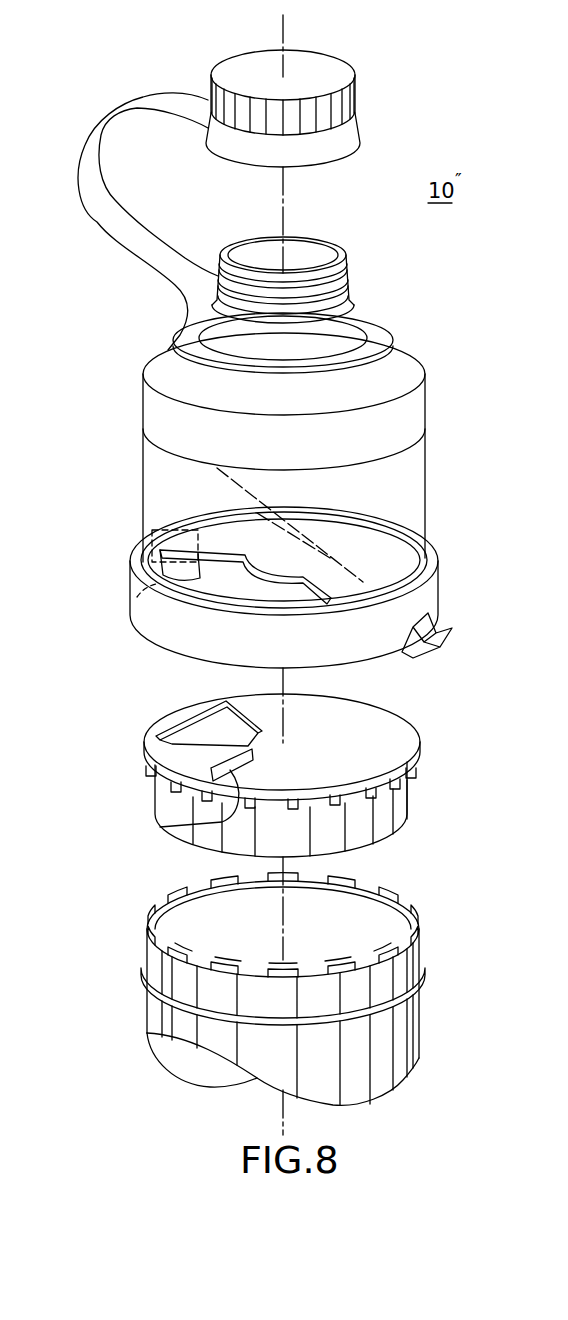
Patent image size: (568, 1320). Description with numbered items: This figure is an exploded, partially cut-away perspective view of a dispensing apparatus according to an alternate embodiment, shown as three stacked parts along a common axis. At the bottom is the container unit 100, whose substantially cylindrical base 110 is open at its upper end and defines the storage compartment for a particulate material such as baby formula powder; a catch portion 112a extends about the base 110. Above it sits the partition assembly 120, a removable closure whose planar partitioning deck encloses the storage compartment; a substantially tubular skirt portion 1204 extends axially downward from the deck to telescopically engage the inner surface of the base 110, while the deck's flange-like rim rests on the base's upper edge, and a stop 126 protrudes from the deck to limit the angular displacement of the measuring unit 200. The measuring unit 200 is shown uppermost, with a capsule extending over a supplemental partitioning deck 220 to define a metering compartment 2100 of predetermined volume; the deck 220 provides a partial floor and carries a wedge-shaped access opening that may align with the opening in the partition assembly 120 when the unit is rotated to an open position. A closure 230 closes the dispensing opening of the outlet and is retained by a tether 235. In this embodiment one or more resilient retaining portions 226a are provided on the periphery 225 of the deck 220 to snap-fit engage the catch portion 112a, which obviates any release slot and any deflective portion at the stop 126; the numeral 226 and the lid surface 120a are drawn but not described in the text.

The container unit 100 is at (351, 1009).
The base 110 is at (363, 1088).
The catch portion 112a is at (412, 983).
The partition assembly 120 is at (292, 778).
The lid top surface 120a is at (390, 735).
The skirt portion 1204 is at (378, 817).
The stop 126 is at (167, 827).
The measuring unit 200 is at (305, 484).
The metering compartment 2100 is at (177, 477).
The supplemental partitioning deck 220 is at (397, 549).
The periphery 225 is at (167, 627).
The latch 226 is at (550, 213).
The retaining portion 226a is at (153, 528).
The closure 230 is at (340, 135).
The tether 235 is at (140, 108).